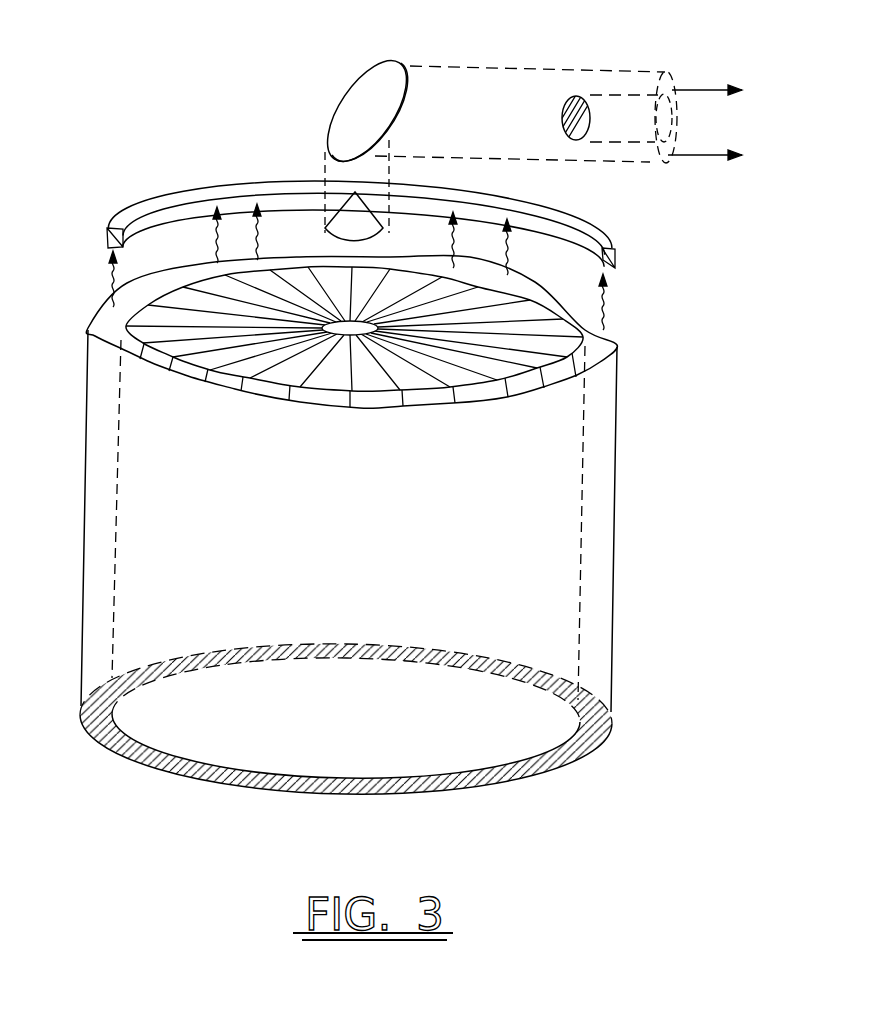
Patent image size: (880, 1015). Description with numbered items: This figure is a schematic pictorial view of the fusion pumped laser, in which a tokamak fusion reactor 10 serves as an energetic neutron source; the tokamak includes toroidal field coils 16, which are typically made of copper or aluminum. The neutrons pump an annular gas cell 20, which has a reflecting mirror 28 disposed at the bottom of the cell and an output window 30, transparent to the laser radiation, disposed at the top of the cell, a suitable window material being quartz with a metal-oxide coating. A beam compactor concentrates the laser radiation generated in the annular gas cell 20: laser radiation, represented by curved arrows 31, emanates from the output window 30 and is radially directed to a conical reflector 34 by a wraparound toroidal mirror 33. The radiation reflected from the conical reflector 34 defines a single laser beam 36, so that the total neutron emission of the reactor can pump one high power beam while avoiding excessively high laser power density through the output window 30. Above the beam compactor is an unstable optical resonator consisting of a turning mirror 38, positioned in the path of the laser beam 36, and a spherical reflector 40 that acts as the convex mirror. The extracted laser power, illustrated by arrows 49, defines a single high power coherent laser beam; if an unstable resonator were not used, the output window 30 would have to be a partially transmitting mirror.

The tokamak fusion reactor 10 is at (691, 358).
The toroidal field coils 16 is at (160, 360).
The annular gas cell 20 is at (605, 478).
The reflecting mirror 28 is at (608, 707).
The output window 30 is at (103, 312).
The curved arrows 31 is at (606, 292).
The wraparound toroidal mirror 33 is at (146, 218).
The conical reflector 34 is at (348, 220).
The single laser beam 36 is at (380, 165).
The turning mirror 38 is at (384, 63).
The spherical reflector 40 is at (572, 97).
The arrows 49 is at (733, 82).